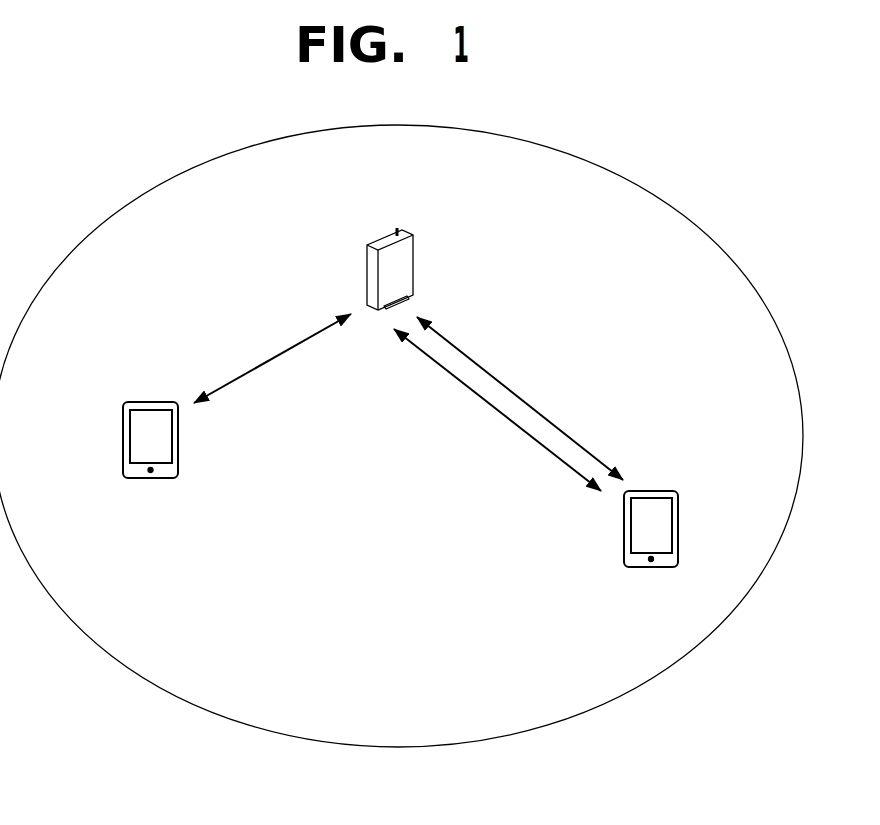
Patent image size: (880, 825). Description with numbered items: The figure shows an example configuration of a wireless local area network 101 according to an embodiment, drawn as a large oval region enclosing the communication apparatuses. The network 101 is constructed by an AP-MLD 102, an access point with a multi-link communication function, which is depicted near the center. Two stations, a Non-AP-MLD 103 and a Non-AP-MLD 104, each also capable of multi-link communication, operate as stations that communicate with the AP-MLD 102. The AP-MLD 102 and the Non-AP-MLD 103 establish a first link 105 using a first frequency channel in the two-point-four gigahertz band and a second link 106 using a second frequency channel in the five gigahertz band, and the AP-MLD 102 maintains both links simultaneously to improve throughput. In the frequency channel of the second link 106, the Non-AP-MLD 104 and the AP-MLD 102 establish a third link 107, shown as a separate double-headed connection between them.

The network 101 is at (632, 187).
The AP-MLD 102 is at (415, 247).
The Non-AP-MLD 103 is at (624, 527).
The Non-AP-MLD 104 is at (123, 440).
The first link 105 is at (520, 398).
The second link 106 is at (490, 407).
The third link 107 is at (250, 370).